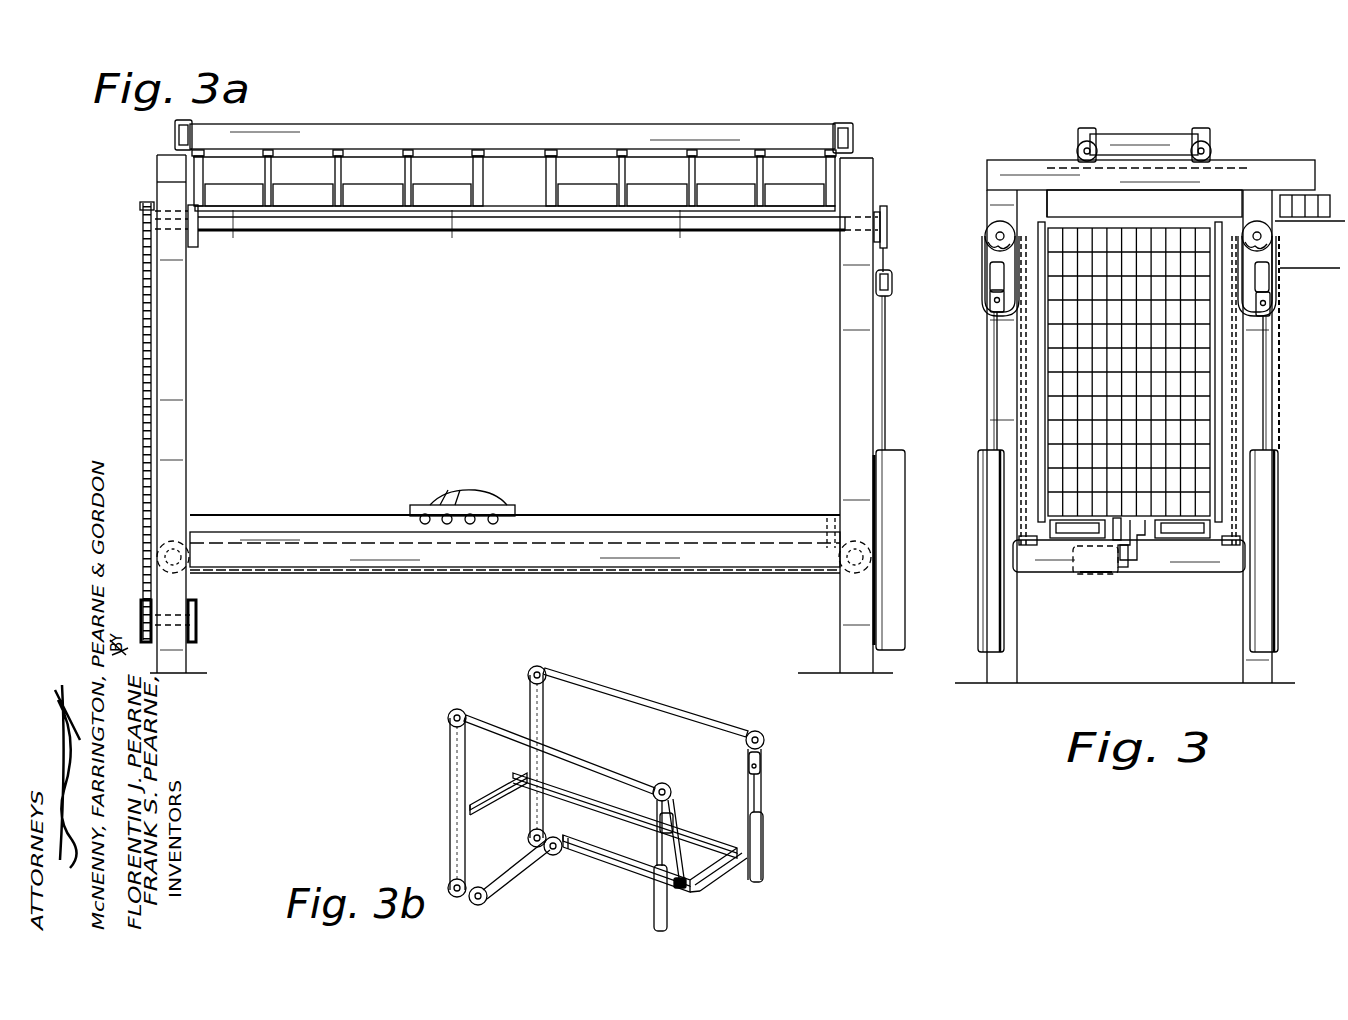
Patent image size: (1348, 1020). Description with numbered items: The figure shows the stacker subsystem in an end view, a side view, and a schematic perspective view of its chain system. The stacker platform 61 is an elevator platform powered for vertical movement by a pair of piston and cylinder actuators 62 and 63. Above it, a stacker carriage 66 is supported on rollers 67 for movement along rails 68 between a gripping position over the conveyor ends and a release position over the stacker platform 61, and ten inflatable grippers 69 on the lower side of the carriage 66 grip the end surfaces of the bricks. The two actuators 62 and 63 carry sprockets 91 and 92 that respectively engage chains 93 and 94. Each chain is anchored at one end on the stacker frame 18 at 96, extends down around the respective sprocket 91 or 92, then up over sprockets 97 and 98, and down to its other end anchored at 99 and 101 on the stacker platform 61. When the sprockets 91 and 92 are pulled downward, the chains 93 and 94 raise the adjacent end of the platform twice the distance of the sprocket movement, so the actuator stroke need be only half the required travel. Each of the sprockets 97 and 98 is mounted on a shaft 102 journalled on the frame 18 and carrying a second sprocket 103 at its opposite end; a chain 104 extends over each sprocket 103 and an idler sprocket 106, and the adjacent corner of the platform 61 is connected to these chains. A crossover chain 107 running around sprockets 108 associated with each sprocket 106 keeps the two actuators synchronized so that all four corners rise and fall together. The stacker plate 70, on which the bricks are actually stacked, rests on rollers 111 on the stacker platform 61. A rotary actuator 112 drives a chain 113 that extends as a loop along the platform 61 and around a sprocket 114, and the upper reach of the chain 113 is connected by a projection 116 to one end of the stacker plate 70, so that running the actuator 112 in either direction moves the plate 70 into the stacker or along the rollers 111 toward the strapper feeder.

In FIG. 3A, the stacker frame 18 is at (873, 196).
In FIG. 3, the stacker frame 18 is at (987, 198).
In FIG. 3, the stacker platform 61 is at (1203, 573).
In FIG. 3B, the stacker platform 61 is at (715, 870).
In FIG. 3A, the piston and cylinder actuator 62 is at (905, 504).
In FIG. 3, the piston and cylinder actuator 62 is at (987, 570).
In FIG. 3B, the piston and cylinder actuator 62 is at (652, 910).
In FIG. 3, the piston and cylinder actuator 63 is at (1278, 546).
In FIG. 3B, the piston and cylinder actuator 63 is at (764, 846).
In FIG. 3A, the stacker carriage 66 is at (708, 142).
In FIG. 3, the stacker carriage 66 is at (1135, 135).
In FIG. 3A, the rollers 67 is at (175, 131).
In FIG. 3, the rollers 67 is at (1212, 152).
In FIG. 3, the rails 68 is at (1290, 162).
In FIG. 3A, the inflatable grippers 69 is at (266, 172).
In FIG. 3, the inflatable grippers 69 is at (1047, 196).
In FIG. 3A, the stacker plate 70 is at (500, 504).
In FIG. 3, the stacker plate 70 is at (1145, 526).
In FIG. 3A, the sprocket 91 is at (896, 300).
In FIG. 3, the sprocket 91 is at (988, 298).
In FIG. 3, the sprocket 92 is at (1274, 304).
In FIG. 3, the chain 93 is at (982, 286).
In FIG. 3B, the chain 93 is at (674, 801).
In FIG. 3, the chain 94 is at (1278, 278).
In FIG. 3B, the chain 94 is at (748, 792).
In FIG. 3, the chain anchor 96 is at (990, 266).
In FIG. 3B, the chain anchor 96 is at (761, 761).
In FIG. 3A, the sprocket 97 is at (890, 222).
In FIG. 3, the sprocket 97 is at (987, 230).
In FIG. 3B, the sprocket 97 is at (664, 783).
In FIG. 3, the sprocket 98 is at (1274, 237).
In FIG. 3B, the sprocket 98 is at (765, 741).
In FIG. 3, the chain anchor 99 is at (1025, 572).
In FIG. 3B, the chain anchor 99 is at (680, 888).
In FIG. 3, the chain anchor 101 is at (1228, 573).
In FIG. 3B, the chain anchor 101 is at (750, 862).
In FIG. 3A, the shaft 102 is at (497, 232).
In FIG. 3, the shaft 102 is at (1130, 372).
In FIG. 3B, the shaft 102 is at (615, 718).
In FIG. 3A, the second sprocket 103 is at (143, 236).
In FIG. 3B, the second sprocket 103 is at (530, 672).
In FIG. 3A, the chain 104 is at (157, 372).
In FIG. 3B, the chain 104 is at (450, 778).
In FIG. 3A, the idler sprocket 106 is at (144, 612).
In FIG. 3B, the idler sprocket 106 is at (453, 896).
In FIG. 3A, the crossover chain 107 is at (200, 603).
In FIG. 3B, the crossover chain 107 is at (500, 882).
In FIG. 3A, the sprocket 108 is at (198, 620).
In FIG. 3B, the sprocket 108 is at (480, 904).
In FIG. 3A, the rollers 111 is at (448, 495).
In FIG. 3, the rollers 111 is at (1072, 531).
In FIG. 3A, the rotary actuator 112 is at (842, 582).
In FIG. 3, the rotary actuator 112 is at (1092, 575).
In FIG. 3A, the chain 113 is at (710, 573).
In FIG. 3, the chain 113 is at (1124, 575).
In FIG. 3A, the sprocket 114 is at (186, 548).
In FIG. 3A, the projection 116 is at (826, 527).
In FIG. 3, the projection 116 is at (1120, 520).